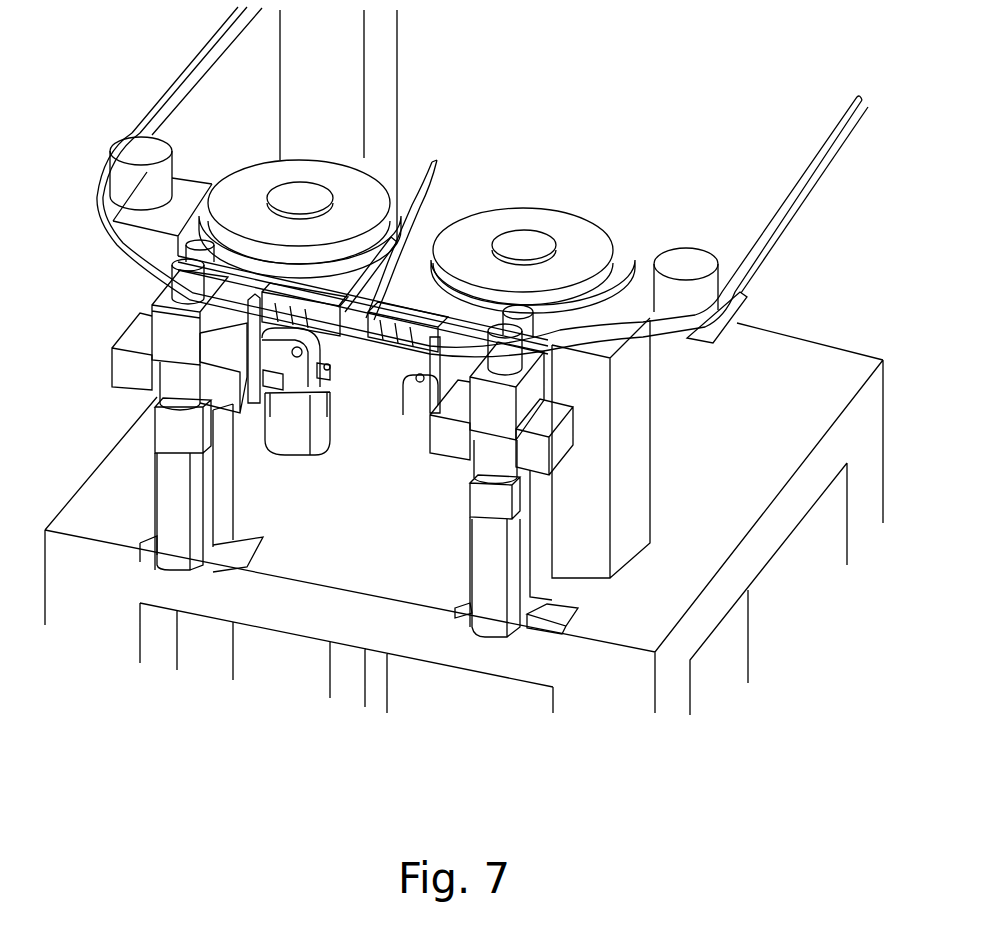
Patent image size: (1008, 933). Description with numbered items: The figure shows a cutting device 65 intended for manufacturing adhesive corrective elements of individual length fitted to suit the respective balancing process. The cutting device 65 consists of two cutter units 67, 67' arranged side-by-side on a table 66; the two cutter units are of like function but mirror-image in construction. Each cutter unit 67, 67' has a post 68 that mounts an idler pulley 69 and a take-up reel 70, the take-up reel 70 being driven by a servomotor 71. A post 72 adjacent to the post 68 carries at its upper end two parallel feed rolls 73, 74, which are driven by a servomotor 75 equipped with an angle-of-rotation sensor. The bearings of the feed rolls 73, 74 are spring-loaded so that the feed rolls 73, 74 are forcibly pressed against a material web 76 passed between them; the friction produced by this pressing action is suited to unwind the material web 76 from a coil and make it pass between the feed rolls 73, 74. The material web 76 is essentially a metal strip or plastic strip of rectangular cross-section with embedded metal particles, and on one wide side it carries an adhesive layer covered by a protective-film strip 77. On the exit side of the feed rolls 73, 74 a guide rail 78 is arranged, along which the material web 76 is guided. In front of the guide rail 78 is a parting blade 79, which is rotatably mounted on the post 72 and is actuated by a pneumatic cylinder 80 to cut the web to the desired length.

The cutting device 65 is at (623, 83).
The table 66 is at (793, 380).
The cutter unit 67 is at (499, 161).
The cutter unit 67' is at (309, 71).
The post 68 is at (627, 485).
The idler pulley 69 is at (680, 258).
The take-up reel 70 is at (295, 168).
The servomotor 71 is at (280, 447).
The post 72 is at (543, 583).
The feed roll 73 is at (510, 353).
The feed roll 74 is at (522, 305).
The servomotor with angle-of-rotation sensor 75 is at (483, 547).
The material web 76 is at (807, 192).
The protective-film strip 77 is at (432, 164).
The guide rail 78 is at (438, 310).
The parting blade 79 is at (243, 320).
The pneumatic cylinder 80 is at (447, 350).